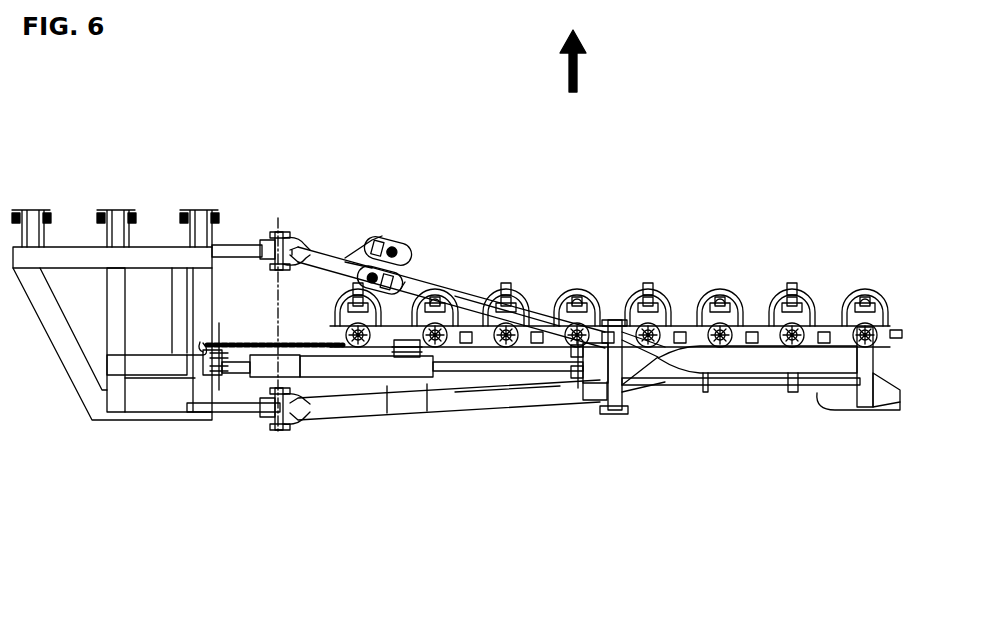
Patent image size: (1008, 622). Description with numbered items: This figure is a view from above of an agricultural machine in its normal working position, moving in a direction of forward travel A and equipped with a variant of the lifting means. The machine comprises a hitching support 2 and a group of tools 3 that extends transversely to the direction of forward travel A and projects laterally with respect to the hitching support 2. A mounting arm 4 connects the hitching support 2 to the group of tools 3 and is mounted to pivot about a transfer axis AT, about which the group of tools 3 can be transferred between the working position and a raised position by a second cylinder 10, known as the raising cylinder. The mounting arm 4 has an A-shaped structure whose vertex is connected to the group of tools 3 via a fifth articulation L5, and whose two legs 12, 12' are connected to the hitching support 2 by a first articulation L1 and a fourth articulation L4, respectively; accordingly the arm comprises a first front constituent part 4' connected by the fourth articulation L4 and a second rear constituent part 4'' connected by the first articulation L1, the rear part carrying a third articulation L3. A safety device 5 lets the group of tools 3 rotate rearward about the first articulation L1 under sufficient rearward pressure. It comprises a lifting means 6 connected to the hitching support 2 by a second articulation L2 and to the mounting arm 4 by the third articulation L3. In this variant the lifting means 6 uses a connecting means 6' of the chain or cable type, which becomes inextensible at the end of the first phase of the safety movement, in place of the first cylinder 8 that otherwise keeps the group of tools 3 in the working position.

The hitching support 2 is at (102, 255).
The tool or group of tools 3 is at (707, 303).
The mounting arm 4 is at (449, 262).
The first front constituent part 4' is at (294, 254).
The second rear constituent part 4'' is at (448, 415).
The safety device 5 is at (404, 219).
The lifting means 6 is at (264, 307).
The connecting means 6' is at (285, 409).
The first cylinder 8 is at (259, 366).
The second cylinder 10 is at (318, 368).
The leg 12 is at (507, 429).
The leg 12' is at (513, 253).
The first articulation L1 is at (287, 438).
The second articulation L2 is at (224, 329).
The third articulation L3 is at (403, 334).
The fourth articulation L4 is at (297, 222).
The fifth articulation L5 is at (613, 420).
The transfer axis AT is at (278, 327).
The direction of forward travel A is at (563, 61).